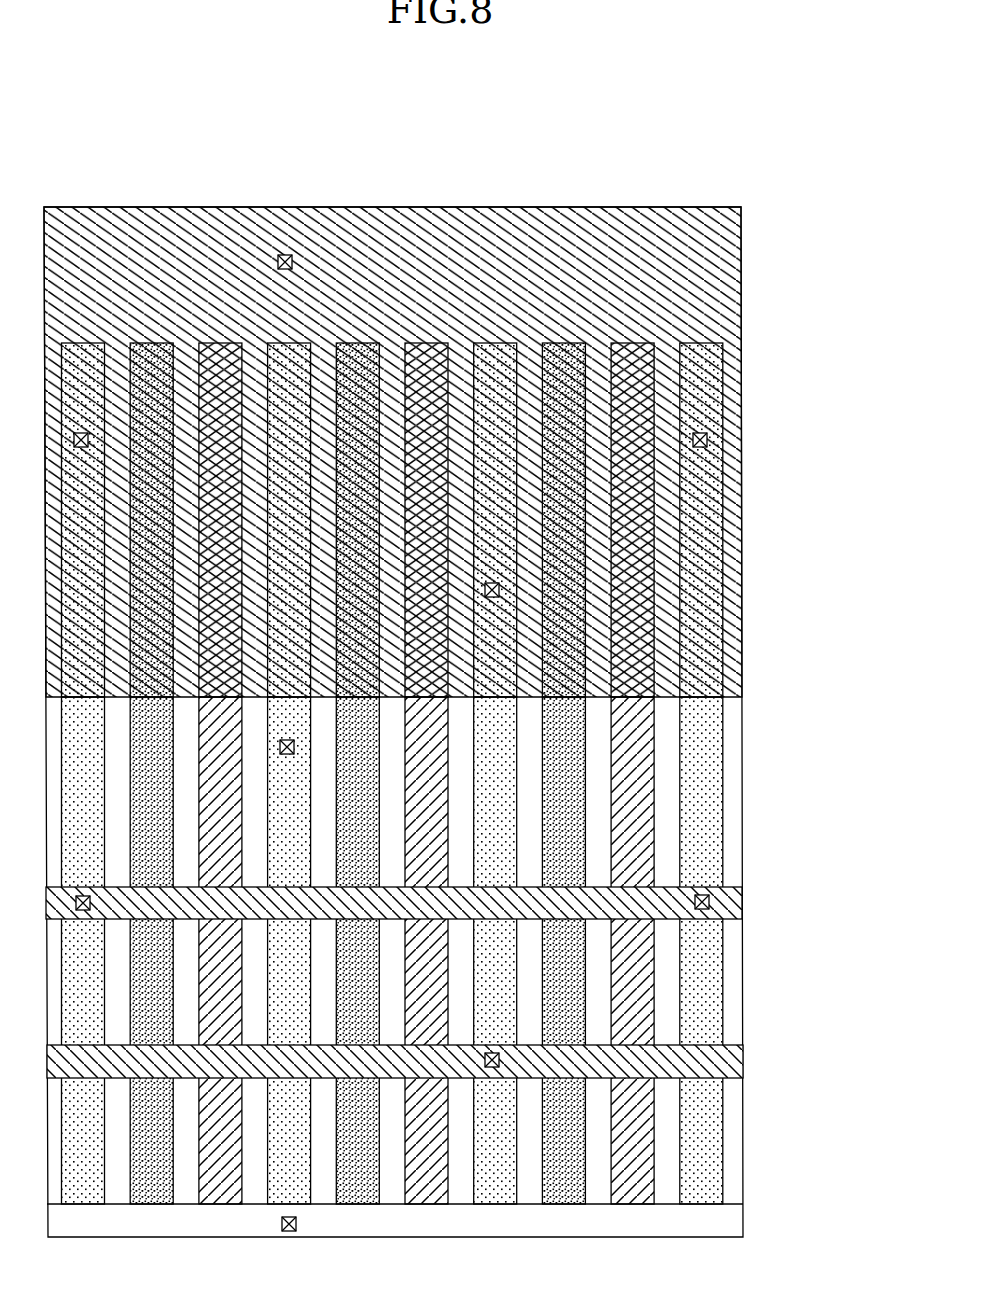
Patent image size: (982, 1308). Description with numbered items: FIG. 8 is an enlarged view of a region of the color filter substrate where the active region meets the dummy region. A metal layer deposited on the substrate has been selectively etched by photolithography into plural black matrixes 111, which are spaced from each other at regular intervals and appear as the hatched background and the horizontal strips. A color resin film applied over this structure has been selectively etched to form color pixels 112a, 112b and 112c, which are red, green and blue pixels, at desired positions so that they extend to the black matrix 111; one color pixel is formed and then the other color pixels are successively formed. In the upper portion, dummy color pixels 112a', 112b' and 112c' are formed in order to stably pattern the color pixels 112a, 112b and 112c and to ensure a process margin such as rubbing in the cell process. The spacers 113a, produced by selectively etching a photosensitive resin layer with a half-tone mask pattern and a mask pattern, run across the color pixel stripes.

The black matrix 111 is at (737, 598).
The dummy color pixel 112a' is at (503, 520).
The dummy color pixel 112b' is at (538, 520).
The dummy color pixel 112c' is at (469, 520).
The color pixel 112a is at (500, 950).
The color pixel 112b is at (535, 950).
The color pixel 112c is at (466, 950).
The spacer 113a is at (712, 902).